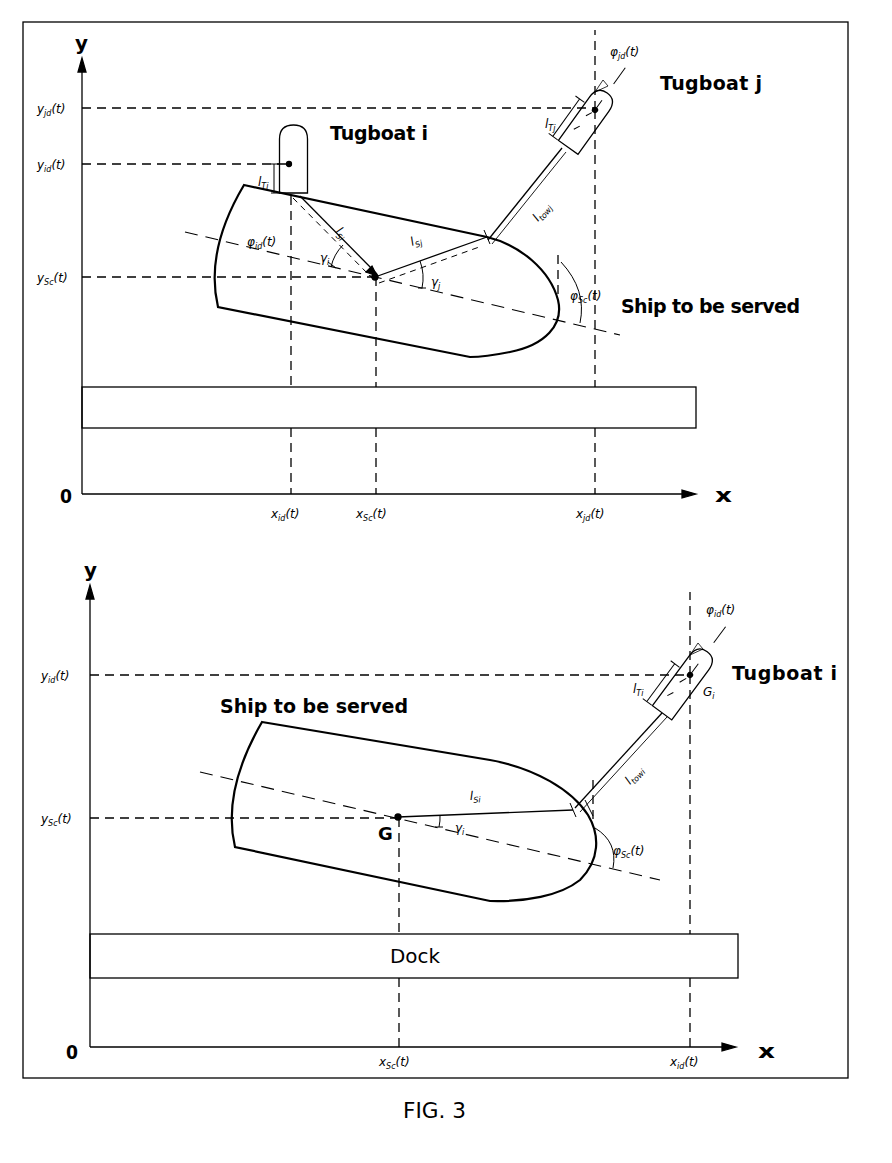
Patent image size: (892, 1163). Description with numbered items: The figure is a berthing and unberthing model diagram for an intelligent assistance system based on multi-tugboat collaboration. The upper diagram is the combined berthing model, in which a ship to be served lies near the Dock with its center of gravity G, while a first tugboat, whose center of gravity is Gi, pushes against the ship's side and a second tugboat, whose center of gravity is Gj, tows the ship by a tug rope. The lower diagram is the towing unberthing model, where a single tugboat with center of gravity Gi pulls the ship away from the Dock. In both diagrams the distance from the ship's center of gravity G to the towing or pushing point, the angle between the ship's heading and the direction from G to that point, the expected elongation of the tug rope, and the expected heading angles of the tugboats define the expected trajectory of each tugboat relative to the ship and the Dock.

The center of gravity of the ship G is at (367, 287).
The center of gravity of tugboat i Gi is at (299, 159).
The center of gravity of tugboat j Gj is at (592, 104).
The dock Dock is at (389, 407).